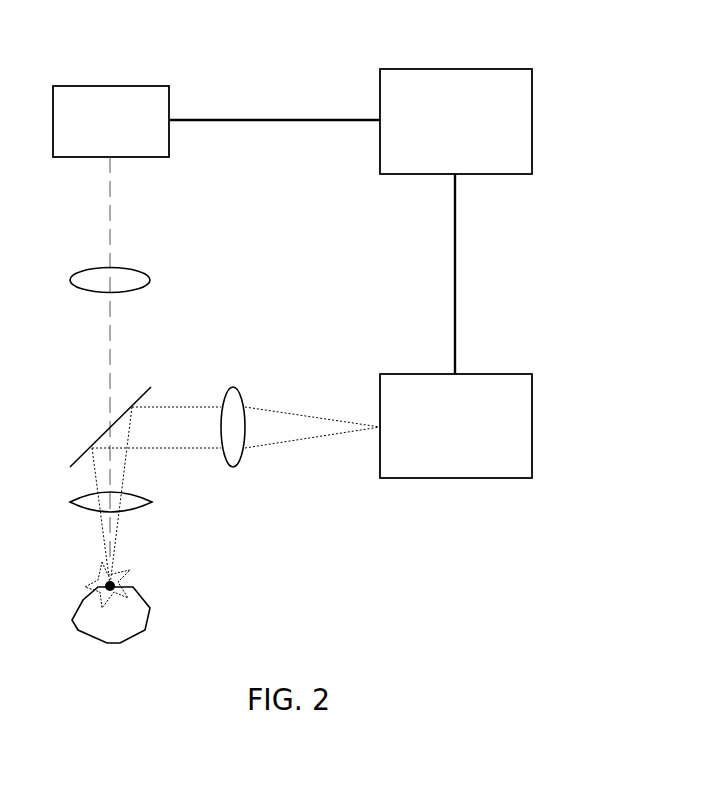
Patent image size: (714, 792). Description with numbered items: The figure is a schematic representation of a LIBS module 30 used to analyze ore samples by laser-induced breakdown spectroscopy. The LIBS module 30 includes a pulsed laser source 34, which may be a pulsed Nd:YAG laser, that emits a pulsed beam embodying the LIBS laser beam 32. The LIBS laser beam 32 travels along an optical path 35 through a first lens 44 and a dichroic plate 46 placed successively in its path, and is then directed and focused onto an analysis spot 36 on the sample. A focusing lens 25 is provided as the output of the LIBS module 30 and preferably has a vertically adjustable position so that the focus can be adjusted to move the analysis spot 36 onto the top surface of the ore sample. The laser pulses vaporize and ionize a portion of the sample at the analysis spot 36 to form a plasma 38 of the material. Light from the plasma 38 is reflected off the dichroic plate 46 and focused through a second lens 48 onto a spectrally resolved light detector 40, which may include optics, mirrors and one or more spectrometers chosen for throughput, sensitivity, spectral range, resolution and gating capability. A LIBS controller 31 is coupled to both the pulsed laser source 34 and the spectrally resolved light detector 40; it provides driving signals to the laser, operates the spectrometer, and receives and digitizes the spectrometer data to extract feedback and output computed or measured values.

The LIBS module 30 is at (584, 76).
The LIBS controller 31 is at (494, 69).
The pulsed laser source 34 is at (116, 86).
The spectrally resolved light detector 40 is at (532, 390).
The LIBS laser beam 32 is at (110, 343).
The first lens 44 is at (150, 280).
The dichroic plate 46 is at (98, 439).
The second lens 48 is at (237, 388).
The focusing lens 25 is at (77, 507).
The optical path 35 is at (132, 538).
The analysis spot 36 is at (118, 585).
The plasma 38 is at (92, 584).